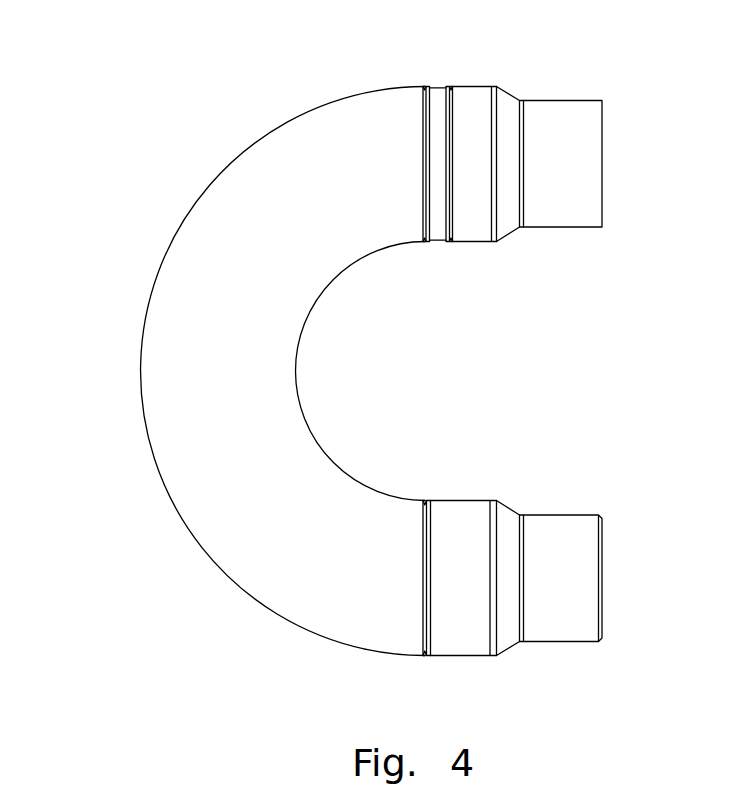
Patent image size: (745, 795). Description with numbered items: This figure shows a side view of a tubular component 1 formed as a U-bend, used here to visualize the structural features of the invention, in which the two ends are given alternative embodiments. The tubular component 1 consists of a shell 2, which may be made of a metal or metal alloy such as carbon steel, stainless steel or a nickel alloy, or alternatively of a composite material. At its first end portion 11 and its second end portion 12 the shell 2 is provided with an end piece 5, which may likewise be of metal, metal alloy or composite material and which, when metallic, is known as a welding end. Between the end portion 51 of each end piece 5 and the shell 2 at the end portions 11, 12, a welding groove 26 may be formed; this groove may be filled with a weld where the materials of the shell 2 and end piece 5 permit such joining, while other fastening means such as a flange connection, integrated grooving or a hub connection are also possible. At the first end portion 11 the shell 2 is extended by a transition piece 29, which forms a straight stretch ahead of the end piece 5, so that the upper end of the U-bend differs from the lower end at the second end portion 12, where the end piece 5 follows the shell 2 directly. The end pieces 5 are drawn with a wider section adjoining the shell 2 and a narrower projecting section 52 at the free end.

The tubular component 1 is at (132, 182).
The shell 2 is at (158, 275).
The first end portion 11 is at (377, 90).
The second end portion 12 is at (365, 650).
The welding groove 26 is at (424, 86).
The transition piece 29 is at (439, 87).
The end piece 5 is at (497, 87).
The end portion of the end piece 51 is at (460, 86).
The small-diameter portion of connector 52 is at (597, 100).